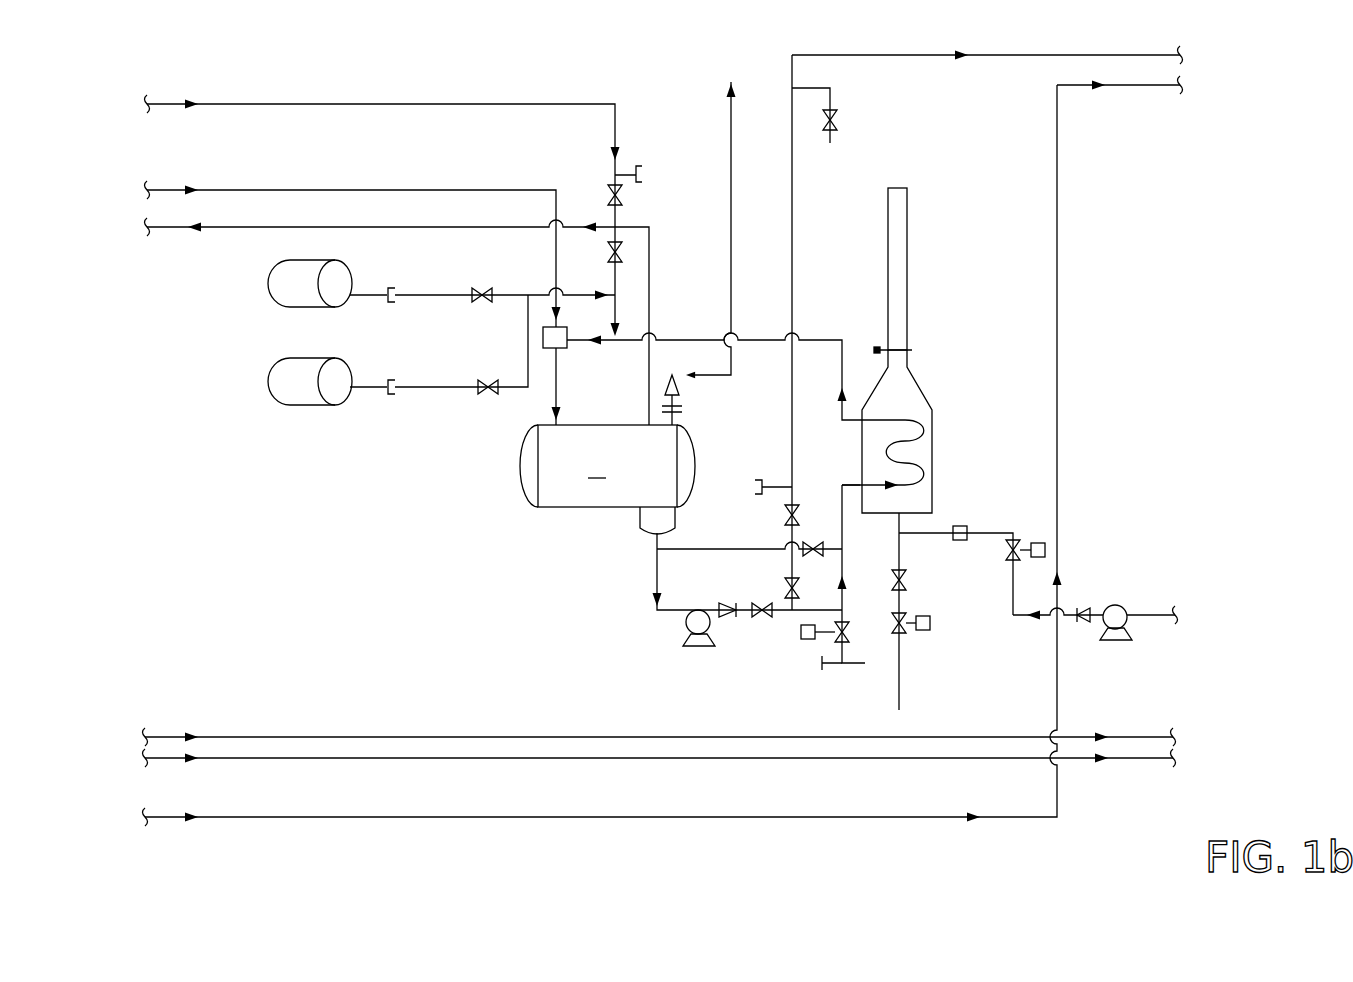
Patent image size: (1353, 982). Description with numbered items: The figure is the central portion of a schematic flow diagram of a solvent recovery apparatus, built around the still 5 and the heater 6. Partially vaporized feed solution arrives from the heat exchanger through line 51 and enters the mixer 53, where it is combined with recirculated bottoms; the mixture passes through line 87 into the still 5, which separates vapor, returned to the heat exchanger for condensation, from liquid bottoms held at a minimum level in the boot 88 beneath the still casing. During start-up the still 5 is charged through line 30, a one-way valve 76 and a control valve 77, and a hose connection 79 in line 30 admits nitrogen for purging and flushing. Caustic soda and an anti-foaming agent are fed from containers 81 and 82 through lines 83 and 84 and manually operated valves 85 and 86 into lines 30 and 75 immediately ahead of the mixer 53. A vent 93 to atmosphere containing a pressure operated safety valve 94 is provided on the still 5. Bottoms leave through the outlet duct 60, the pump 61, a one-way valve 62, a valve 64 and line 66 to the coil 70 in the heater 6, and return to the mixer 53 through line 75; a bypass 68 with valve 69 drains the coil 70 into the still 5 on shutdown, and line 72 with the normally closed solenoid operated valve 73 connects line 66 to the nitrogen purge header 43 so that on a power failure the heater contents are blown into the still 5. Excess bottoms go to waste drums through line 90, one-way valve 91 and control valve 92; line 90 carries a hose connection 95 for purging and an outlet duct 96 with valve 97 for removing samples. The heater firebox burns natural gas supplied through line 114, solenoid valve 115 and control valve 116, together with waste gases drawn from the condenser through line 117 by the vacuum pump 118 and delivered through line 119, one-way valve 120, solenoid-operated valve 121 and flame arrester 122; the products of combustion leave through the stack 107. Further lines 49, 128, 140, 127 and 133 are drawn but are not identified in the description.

The line 30 is at (270, 103).
The line 51 is at (227, 188).
The return line 49 is at (158, 232).
The hose connection 79 is at (638, 182).
The one-way valve 76 is at (610, 195).
The control valve 77 is at (625, 262).
The vent 93 is at (731, 205).
The pressure operated safety valve 94 is at (690, 380).
The line 75 is at (820, 338).
The line 90 is at (876, 58).
The outlet duct 96 is at (798, 95).
The valve 97 is at (840, 120).
The line 133 is at (1148, 88).
The stack 107 is at (906, 258).
The heater 6 is at (925, 420).
The coil 70 is at (930, 482).
The line 66 is at (844, 498).
The container 82 is at (270, 290).
The line 84 is at (422, 295).
The manually operated valve 86 is at (485, 292).
The container 81 is at (268, 387).
The line 83 is at (430, 392).
The manually operated valve 85 is at (490, 392).
The mixer 53 is at (543, 337).
The line 87 is at (553, 398).
The still 5 is at (520, 480).
The hose connection 95 is at (780, 487).
The control valve 92 is at (787, 518).
The boot 88 is at (645, 522).
The outlet duct 60 is at (657, 580).
The bypass 68 is at (740, 549).
The valve 69 is at (820, 545).
The one-way valve 91 is at (782, 588).
The one-way valve 62 is at (725, 604).
The valve 64 is at (762, 622).
The pump 61 is at (683, 640).
The line 72 is at (852, 628).
The solenoid operated valve 73 is at (820, 645).
The nitrogen purge header 43 is at (836, 670).
The line 114 is at (903, 685).
The control valve 116 is at (906, 582).
The solenoid valve 115 is at (906, 626).
The flame arrester 122 is at (968, 528).
The solenoid-operated valve 121 is at (1020, 550).
The line 119 is at (1015, 620).
The one-way valve 120 is at (1080, 625).
The vacuum pump 118 is at (1120, 605).
The line 117 is at (1180, 612).
The line 128 is at (175, 735).
The line 127 is at (1138, 735).
The line 140 is at (175, 760).